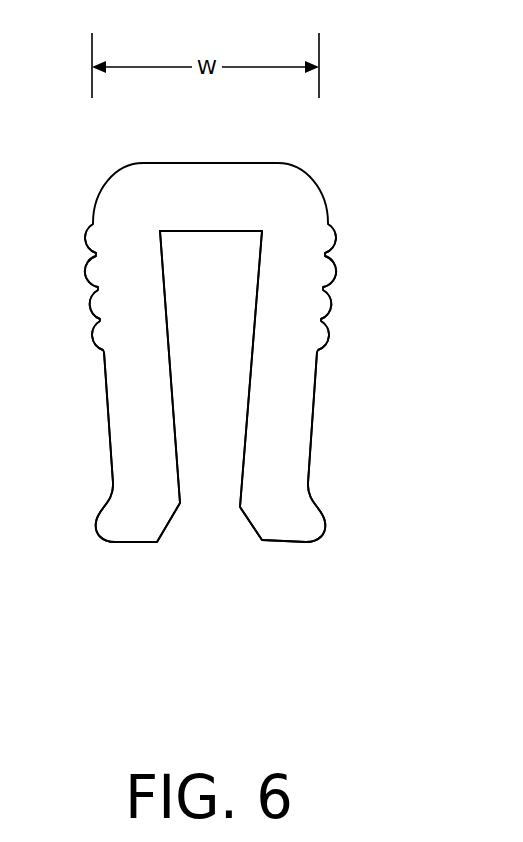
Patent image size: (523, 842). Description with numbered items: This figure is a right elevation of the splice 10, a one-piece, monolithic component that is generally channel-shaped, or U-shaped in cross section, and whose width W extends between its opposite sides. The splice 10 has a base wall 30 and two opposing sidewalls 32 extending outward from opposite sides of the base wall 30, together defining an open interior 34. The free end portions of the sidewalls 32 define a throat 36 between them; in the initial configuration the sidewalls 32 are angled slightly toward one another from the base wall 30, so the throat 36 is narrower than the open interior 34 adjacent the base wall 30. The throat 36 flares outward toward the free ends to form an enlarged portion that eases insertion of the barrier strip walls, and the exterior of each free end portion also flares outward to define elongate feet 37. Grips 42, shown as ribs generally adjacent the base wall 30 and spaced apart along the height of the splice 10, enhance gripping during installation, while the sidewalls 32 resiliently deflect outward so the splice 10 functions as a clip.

The splice 10 is at (442, 75).
The base wall 30 is at (277, 163).
The sidewalls 32 is at (107, 402).
The open interior 34 is at (190, 304).
The throat 36 is at (238, 507).
The feet 37 is at (97, 522).
The grips 42 is at (87, 268).